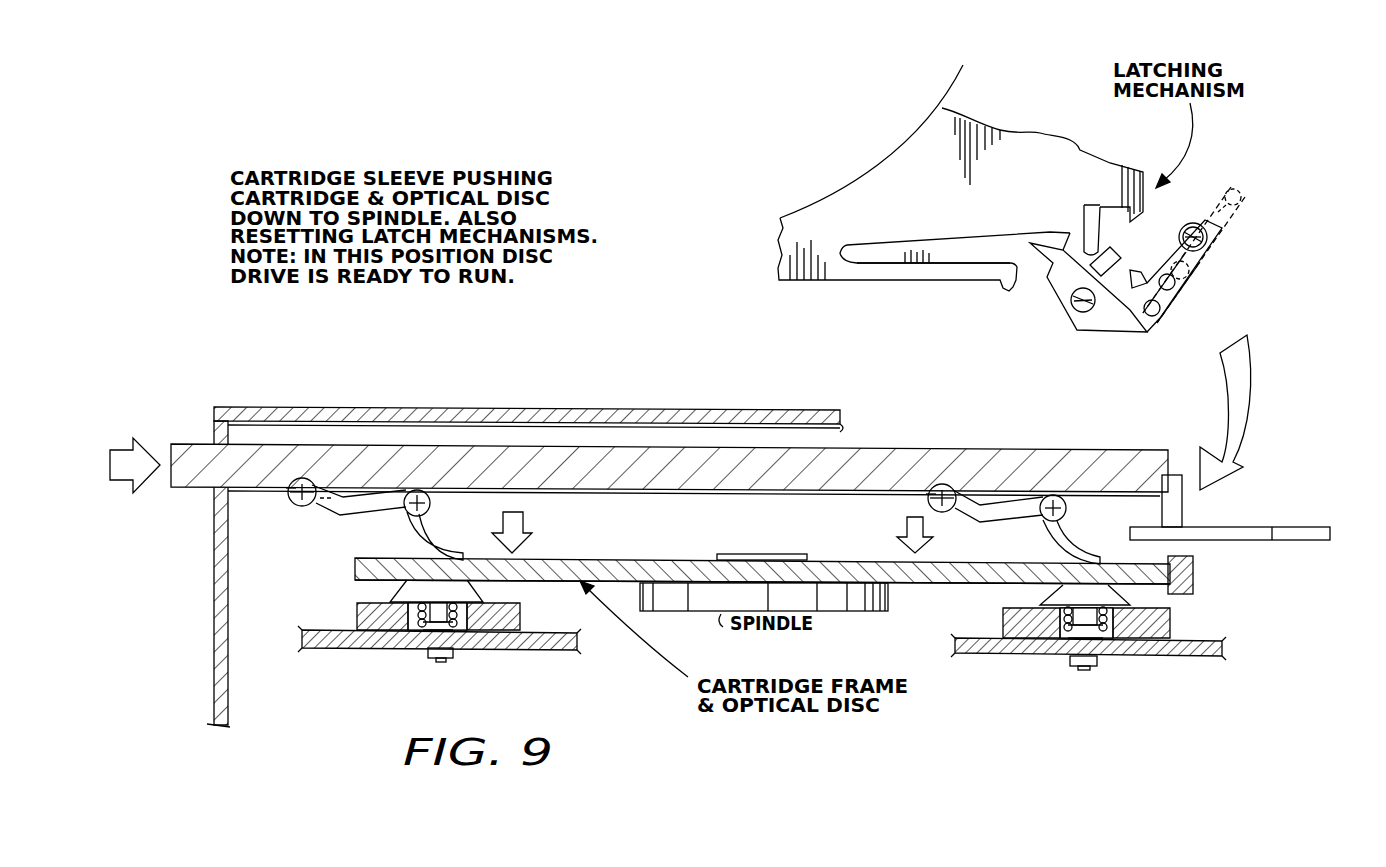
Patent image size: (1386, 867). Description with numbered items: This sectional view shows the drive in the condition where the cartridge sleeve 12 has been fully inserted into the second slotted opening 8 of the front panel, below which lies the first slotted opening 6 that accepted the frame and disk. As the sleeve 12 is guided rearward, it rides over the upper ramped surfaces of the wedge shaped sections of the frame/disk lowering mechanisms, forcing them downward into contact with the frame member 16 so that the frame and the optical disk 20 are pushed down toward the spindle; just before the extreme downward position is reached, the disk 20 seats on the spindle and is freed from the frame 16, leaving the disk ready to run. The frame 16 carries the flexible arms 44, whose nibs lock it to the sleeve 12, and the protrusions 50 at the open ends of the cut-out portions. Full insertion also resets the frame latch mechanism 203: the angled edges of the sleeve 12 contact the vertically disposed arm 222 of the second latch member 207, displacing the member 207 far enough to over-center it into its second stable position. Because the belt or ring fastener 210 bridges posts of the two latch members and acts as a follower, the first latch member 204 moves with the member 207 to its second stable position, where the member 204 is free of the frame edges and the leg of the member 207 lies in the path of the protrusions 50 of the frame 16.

The first slotted opening 6 is at (218, 520).
The second slotted opening 8 is at (214, 433).
The sleeve component 12 is at (1043, 460).
The frame member 16 is at (774, 562).
The optical disk 20 is at (917, 584).
The arm 44 is at (947, 279).
The protrusion 50 is at (1092, 257).
The frame latch mechanism 203 is at (1260, 527).
The first latch member 204 is at (1213, 253).
The second latch member 207 is at (1113, 334).
The belt or ring fastener 210 is at (1164, 304).
The vertically disposed arm 222 is at (1118, 262).